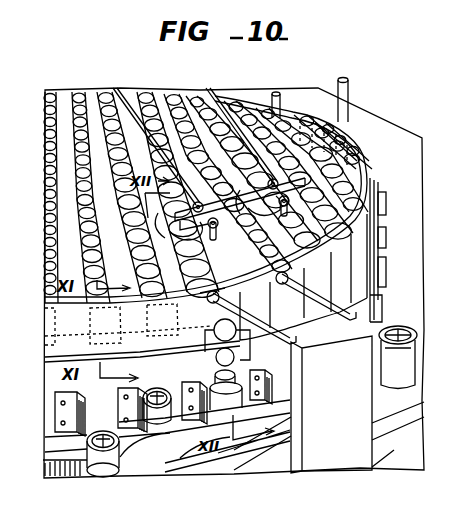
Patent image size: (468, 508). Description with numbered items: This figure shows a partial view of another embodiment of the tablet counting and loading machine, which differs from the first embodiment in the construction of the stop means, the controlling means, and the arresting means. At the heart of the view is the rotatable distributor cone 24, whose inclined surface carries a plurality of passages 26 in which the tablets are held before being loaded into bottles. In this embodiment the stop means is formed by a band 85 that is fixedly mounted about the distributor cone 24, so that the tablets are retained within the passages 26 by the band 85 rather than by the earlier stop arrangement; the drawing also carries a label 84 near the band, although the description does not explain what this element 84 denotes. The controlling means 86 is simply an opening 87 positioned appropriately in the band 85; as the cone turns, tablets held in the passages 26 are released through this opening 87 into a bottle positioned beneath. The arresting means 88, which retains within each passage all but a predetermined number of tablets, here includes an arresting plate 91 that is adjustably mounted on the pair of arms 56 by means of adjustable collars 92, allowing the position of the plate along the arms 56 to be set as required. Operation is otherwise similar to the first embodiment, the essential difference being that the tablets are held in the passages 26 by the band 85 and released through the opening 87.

The distributor cone 24 is at (173, 85).
The arms 56 is at (152, 133).
The band 85 is at (312, 125).
The bracket column 84 is at (374, 138).
The adjustable collars 92 is at (262, 188).
The arresting plate 91 is at (240, 209).
The passages 26 is at (216, 270).
The arresting means 88 is at (313, 258).
The opening 87 is at (148, 366).
The controlling means 86 is at (360, 341).